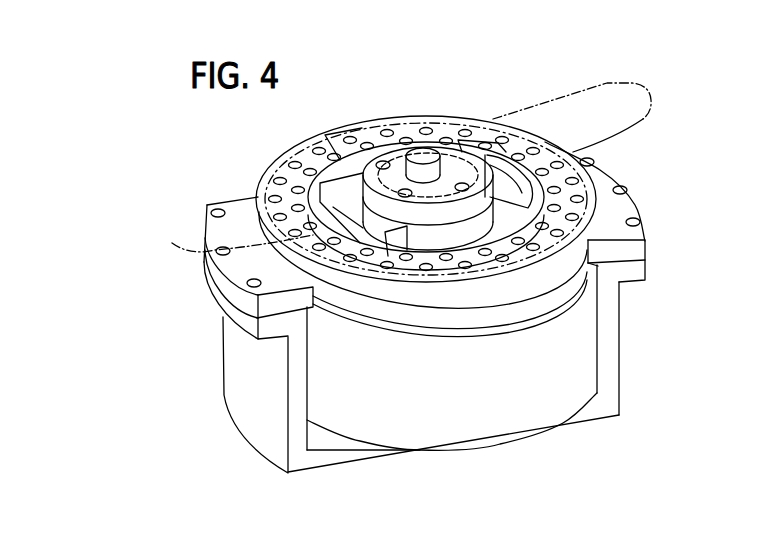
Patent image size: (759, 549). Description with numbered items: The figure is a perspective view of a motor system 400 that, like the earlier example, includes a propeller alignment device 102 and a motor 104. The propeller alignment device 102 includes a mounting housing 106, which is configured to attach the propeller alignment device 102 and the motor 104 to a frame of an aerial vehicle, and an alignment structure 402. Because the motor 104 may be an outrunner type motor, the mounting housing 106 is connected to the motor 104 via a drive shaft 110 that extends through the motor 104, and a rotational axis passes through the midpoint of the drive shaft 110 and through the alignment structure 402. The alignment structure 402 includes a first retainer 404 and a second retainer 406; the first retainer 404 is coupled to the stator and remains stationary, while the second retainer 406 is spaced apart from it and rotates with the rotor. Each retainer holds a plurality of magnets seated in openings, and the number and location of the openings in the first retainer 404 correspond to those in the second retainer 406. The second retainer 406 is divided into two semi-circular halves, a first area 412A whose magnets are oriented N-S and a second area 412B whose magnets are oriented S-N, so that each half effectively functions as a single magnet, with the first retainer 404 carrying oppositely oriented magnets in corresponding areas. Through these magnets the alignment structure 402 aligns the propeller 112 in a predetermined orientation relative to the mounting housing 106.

The motor system 400 is at (460, 80).
The drive shaft 110 is at (408, 122).
The propeller 112 is at (607, 83).
The first area 412A is at (578, 183).
The second area 412B is at (268, 183).
The alignment structure 402 is at (663, 203).
The first retainer 404 is at (270, 305).
The second retainer 406 is at (380, 290).
The propeller alignment device 102 is at (665, 243).
The motor 104 is at (510, 437).
The mounting housing 106 is at (613, 396).